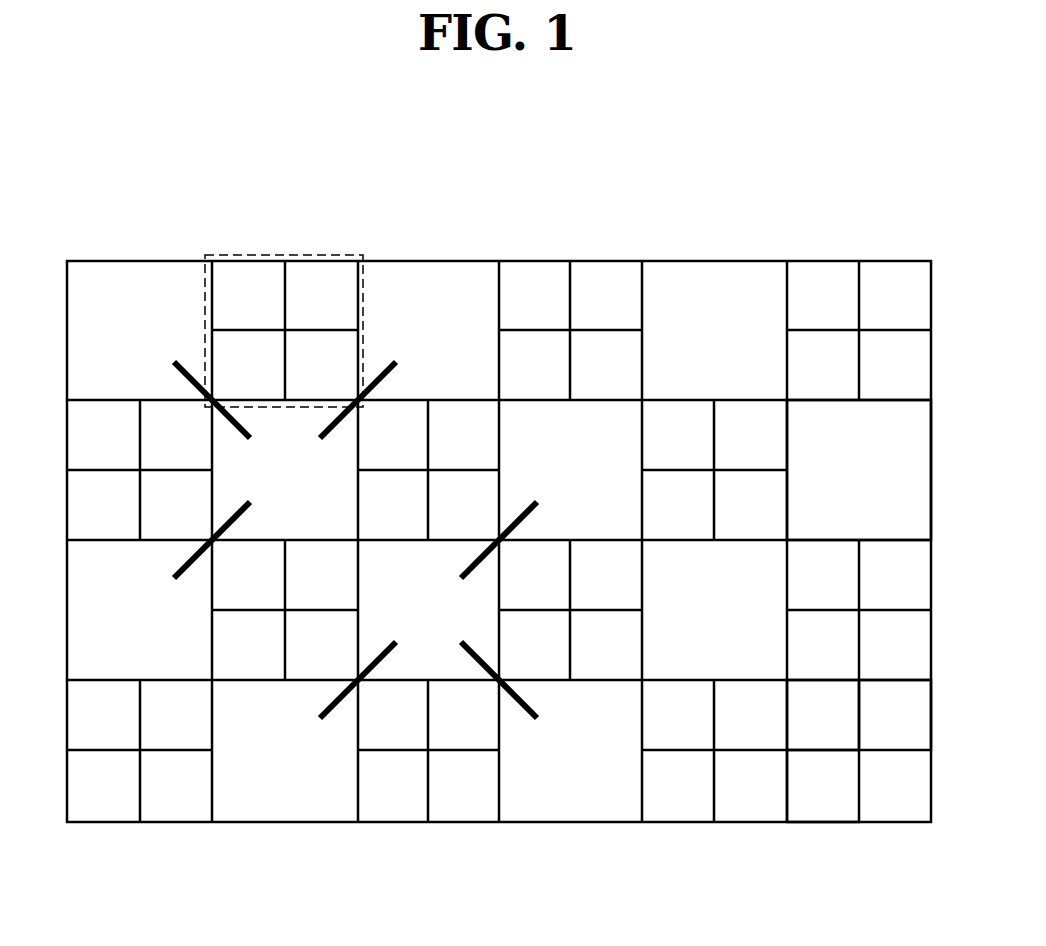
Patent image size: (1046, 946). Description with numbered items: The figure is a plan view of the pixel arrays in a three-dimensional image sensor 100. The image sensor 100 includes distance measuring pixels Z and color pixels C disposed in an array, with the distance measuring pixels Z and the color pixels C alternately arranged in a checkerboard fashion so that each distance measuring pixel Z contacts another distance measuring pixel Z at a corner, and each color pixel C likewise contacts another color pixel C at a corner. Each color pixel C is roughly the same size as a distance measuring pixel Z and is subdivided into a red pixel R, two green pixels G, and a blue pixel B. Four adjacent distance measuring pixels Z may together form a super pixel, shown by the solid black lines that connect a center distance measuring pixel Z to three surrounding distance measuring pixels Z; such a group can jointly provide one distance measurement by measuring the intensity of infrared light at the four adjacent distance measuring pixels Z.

The 3D image sensor 100 is at (528, 162).
The color pixel C is at (285, 255).
The distance measuring pixel Z is at (859, 470).
The green pixel G is at (823, 715).
The blue pixel B is at (895, 715).
The red pixel R is at (823, 786).